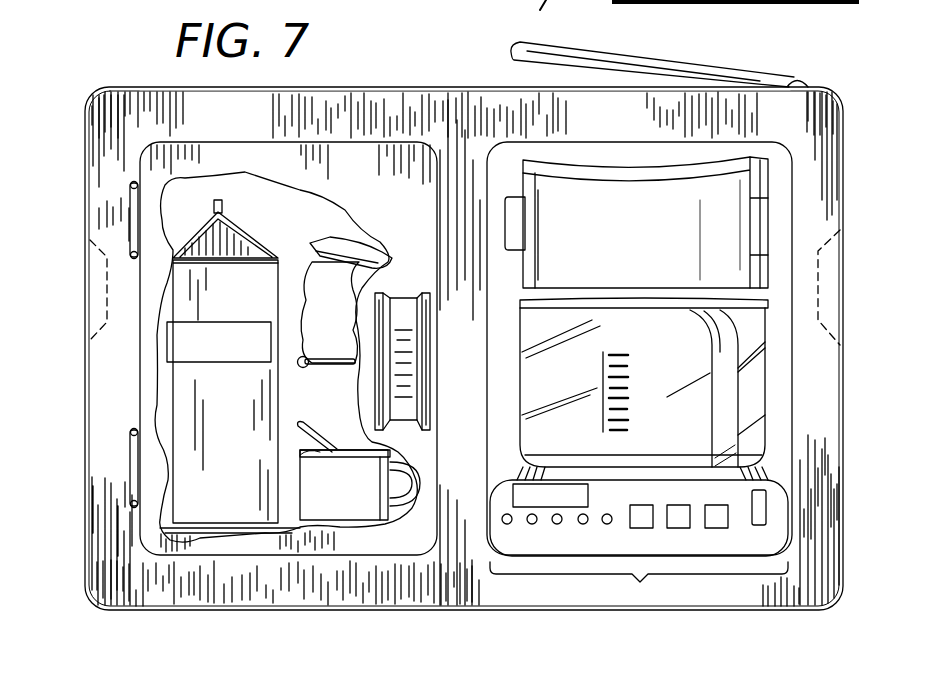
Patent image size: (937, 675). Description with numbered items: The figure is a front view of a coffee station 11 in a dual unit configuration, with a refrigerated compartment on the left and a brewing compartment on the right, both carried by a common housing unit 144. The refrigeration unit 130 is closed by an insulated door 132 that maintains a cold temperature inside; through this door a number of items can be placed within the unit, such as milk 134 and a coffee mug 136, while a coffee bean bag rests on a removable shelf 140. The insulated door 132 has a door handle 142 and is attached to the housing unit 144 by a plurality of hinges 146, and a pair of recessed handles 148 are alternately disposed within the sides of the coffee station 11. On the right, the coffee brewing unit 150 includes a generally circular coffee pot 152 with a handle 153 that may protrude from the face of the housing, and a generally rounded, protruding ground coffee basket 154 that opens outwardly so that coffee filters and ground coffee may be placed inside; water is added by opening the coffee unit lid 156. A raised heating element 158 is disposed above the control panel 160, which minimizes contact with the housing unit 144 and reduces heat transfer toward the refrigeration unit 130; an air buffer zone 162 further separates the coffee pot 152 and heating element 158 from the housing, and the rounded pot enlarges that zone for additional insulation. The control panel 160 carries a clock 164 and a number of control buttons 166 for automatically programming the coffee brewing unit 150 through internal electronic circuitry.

The coffee station 11 is at (432, 78).
The housing unit 144 is at (302, 130).
The insulated door 132 is at (395, 187).
The refrigeration unit 130 is at (305, 225).
The milk 134 is at (238, 425).
The removable shelf 140 is at (338, 369).
The door handle 142 is at (405, 312).
The coffee mug 136 is at (368, 497).
The hinges 146 is at (132, 198).
The recessed handles 148 is at (92, 308).
The coffee unit lid 156 is at (623, 54).
The air buffer zone 162 is at (506, 404).
The ground coffee basket 154 is at (650, 251).
The coffee pot 152 is at (690, 381).
The handle 153 is at (722, 343).
The heating element 158 is at (656, 473).
The clock 164 is at (493, 497).
The control buttons 166 is at (641, 528).
The control panel 160 is at (770, 530).
The coffee brewing unit 150 is at (639, 583).